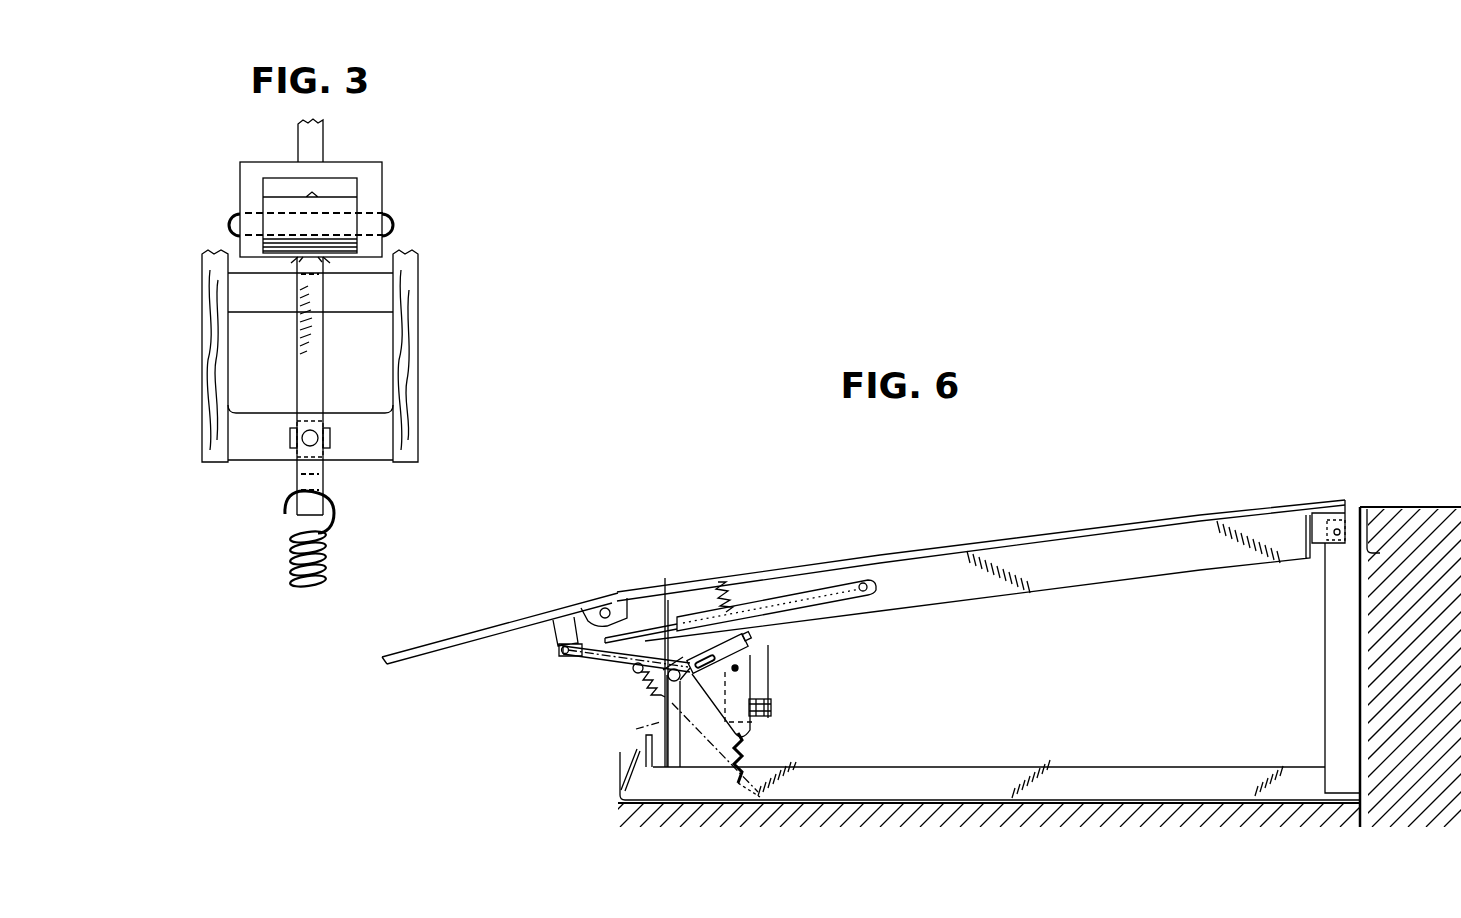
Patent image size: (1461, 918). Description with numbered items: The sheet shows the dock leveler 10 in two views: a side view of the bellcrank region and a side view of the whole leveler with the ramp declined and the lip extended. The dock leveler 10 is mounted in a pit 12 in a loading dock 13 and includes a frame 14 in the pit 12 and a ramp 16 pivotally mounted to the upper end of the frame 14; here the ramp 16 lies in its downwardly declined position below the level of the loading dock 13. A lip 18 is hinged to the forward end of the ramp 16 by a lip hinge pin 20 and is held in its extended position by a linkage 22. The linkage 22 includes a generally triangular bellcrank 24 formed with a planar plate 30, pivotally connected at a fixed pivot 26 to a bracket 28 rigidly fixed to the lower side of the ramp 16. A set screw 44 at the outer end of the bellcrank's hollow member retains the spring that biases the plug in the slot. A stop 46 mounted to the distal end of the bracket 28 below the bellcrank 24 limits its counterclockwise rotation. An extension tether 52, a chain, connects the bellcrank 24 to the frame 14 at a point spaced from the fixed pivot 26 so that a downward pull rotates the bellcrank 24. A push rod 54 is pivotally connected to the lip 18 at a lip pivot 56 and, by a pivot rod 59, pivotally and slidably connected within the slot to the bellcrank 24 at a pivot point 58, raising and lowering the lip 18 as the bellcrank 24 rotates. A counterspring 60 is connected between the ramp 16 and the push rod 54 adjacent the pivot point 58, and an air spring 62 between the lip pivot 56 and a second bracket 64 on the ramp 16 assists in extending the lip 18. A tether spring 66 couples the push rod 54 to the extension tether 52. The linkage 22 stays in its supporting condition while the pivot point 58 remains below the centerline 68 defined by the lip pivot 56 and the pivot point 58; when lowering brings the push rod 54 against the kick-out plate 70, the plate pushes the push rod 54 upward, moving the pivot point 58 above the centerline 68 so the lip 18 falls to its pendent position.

In FIG. 6, the dock leveler 10 is at (1102, 520).
In FIG. 6, the pit 12 is at (1315, 723).
In FIG. 6, the loading dock 13 is at (1447, 507).
In FIG. 6, the frame 14 is at (1077, 767).
In FIG. 6, the ramp 16 is at (1033, 540).
In FIG. 6, the lip 18 is at (527, 616).
In FIG. 6, the lip hinge pin 20 is at (600, 606).
In FIG. 6, the linkage 22 is at (836, 661).
In FIG. 3, the bellcrank 24 is at (333, 355).
In FIG. 6, the bellcrank 24 is at (742, 690).
In FIG. 3, the fixed pivot 26 is at (383, 290).
In FIG. 6, the fixed pivot 26 is at (752, 657).
In FIG. 3, the bracket 28 is at (220, 368).
In FIG. 6, the bracket 28 is at (753, 588).
In FIG. 3, the plate 30 is at (317, 394).
In FIG. 3, the set screw 44 is at (316, 192).
In FIG. 3, the stop 46 is at (287, 451).
In FIG. 6, the stop 46 is at (780, 713).
In FIG. 3, the extension tether 52 is at (383, 208).
In FIG. 6, the extension tether 52 is at (743, 742).
In FIG. 3, the push rod 54 is at (316, 134).
In FIG. 6, the push rod 54 is at (603, 664).
In FIG. 6, the lip pivot 56 is at (564, 656).
In FIG. 3, the pivot point 58 is at (241, 232).
In FIG. 6, the pivot point 58 is at (662, 692).
In FIG. 3, the pivot rod 59 is at (277, 216).
In FIG. 6, the counterspring 60 is at (724, 596).
In FIG. 6, the air spring 62 is at (813, 594).
In FIG. 6, the second bracket 64 is at (866, 576).
In FIG. 6, the tether spring 66 is at (636, 729).
In FIG. 6, the centerline 68 is at (663, 645).
In FIG. 6, the kick-out plate 70 is at (680, 763).